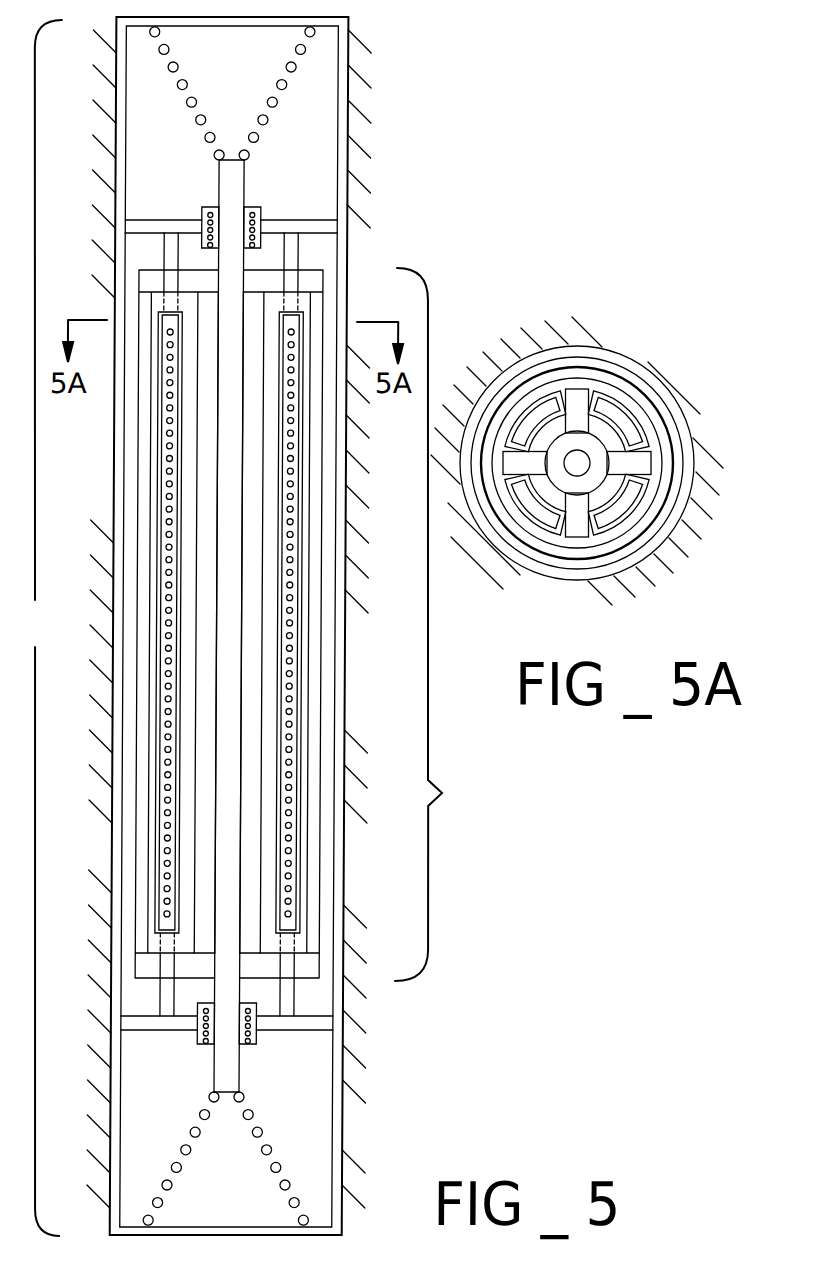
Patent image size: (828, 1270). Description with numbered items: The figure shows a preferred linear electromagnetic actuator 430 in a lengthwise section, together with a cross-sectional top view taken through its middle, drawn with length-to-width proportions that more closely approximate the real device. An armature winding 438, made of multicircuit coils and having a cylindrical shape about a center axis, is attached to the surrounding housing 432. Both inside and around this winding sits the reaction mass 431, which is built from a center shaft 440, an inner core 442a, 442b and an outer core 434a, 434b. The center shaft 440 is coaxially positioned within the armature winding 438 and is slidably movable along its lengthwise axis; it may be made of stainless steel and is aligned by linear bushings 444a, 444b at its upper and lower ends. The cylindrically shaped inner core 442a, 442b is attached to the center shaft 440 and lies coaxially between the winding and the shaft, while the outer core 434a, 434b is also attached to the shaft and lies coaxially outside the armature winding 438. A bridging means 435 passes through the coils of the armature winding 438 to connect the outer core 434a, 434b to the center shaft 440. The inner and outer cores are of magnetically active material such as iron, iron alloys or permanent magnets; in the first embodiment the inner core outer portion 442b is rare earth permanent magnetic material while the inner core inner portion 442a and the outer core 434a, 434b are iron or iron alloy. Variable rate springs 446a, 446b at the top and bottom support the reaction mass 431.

In FIG. 5, the actuator 430 is at (38, 628).
In FIG. 5, the reaction mass 431 is at (447, 624).
In FIG. 5, the housing 432 is at (346, 251).
In FIG. 5A, the housing 432 is at (556, 347).
In FIG. 5, the outer core 434a is at (310, 843).
In FIG. 5A, the outer core 434a is at (608, 378).
In FIG. 5, the outer core 434b is at (305, 876).
In FIG. 5A, the outer core 434b is at (613, 393).
In FIG. 5, the bridging means 435 is at (174, 302).
In FIG. 5A, the bridging means 435 is at (577, 402).
In FIG. 5, the armature winding 438 is at (170, 835).
In FIG. 5A, the armature winding 438 is at (608, 518).
In FIG. 5, the center shaft 440 is at (234, 460).
In FIG. 5A, the center shaft 440 is at (578, 463).
In FIG. 5, the inner core inner portion 442a is at (250, 610).
In FIG. 5A, the inner core inner portion 442a is at (595, 477).
In FIG. 5, the inner core outer portion 442b is at (266, 668).
In FIG. 5A, the inner core outer portion 442b is at (615, 447).
In FIG. 5, the linear bushing 444a is at (254, 205).
In FIG. 5, the linear bushing 444b is at (213, 1048).
In FIG. 5, the variable rate spring 446a is at (284, 82).
In FIG. 5, the variable rate spring 446b is at (286, 1168).